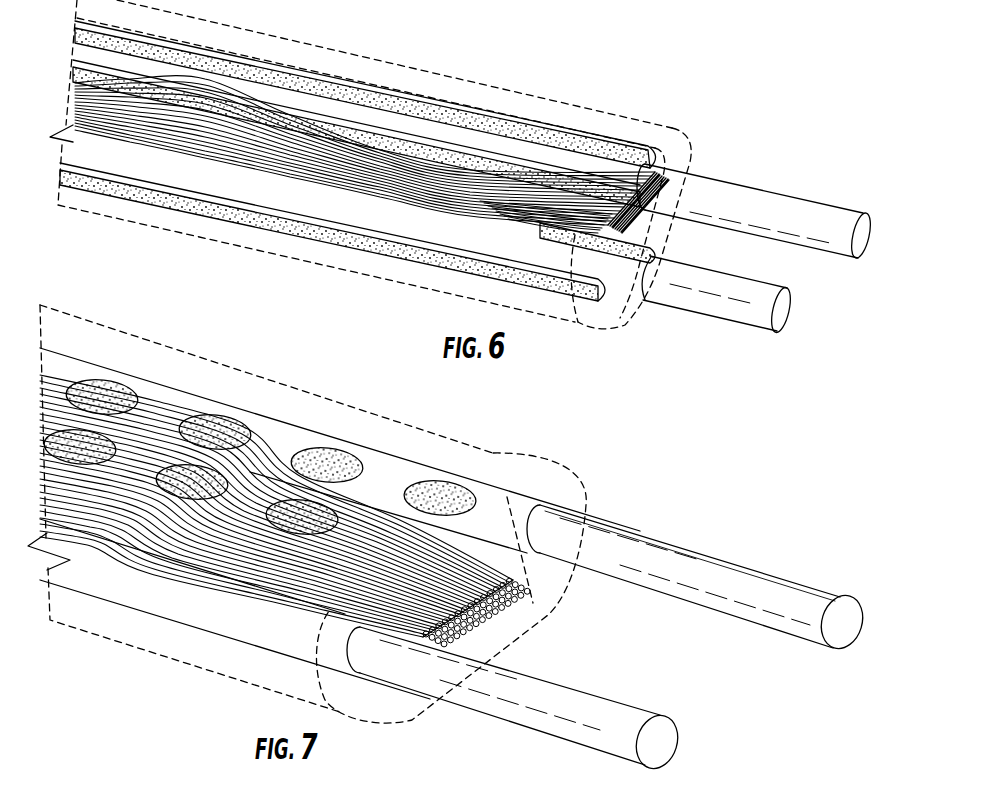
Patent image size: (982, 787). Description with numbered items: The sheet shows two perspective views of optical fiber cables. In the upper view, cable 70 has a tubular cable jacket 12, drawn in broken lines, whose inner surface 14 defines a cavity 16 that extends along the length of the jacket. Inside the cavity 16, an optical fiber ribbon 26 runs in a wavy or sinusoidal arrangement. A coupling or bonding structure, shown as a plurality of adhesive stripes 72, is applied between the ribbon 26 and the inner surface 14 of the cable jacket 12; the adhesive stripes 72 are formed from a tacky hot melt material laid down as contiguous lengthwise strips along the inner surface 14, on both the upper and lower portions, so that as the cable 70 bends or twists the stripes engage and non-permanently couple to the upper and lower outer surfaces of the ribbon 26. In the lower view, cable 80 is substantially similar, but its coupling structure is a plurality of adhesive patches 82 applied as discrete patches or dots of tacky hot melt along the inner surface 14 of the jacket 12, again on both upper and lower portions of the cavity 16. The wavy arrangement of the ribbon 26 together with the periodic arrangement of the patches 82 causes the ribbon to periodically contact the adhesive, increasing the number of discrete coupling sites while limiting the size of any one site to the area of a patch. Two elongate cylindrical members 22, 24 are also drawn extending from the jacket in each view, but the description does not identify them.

In FIG. 6, the cable jacket 12 is at (688, 133).
In FIG. 7, the cable jacket 12 is at (587, 470).
In FIG. 6, the inner surface 14 is at (656, 228).
In FIG. 7, the inner surface 14 is at (524, 605).
In FIG. 7, the cavity 16 is at (503, 556).
In FIG. 6, the first tube 22 is at (788, 312).
In FIG. 7, the first tube 22 is at (660, 743).
In FIG. 6, the second tube 24 is at (867, 250).
In FIG. 7, the second tube 24 is at (842, 627).
In FIG. 6, the ribbon 26 is at (610, 170).
In FIG. 7, the ribbon 26 is at (360, 543).
In FIG. 6, the cable 70 is at (728, 118).
In FIG. 6, the adhesive stripes 72 is at (563, 137).
In FIG. 7, the cable 80 is at (790, 547).
In FIG. 7, the adhesive patches 82 is at (227, 420).